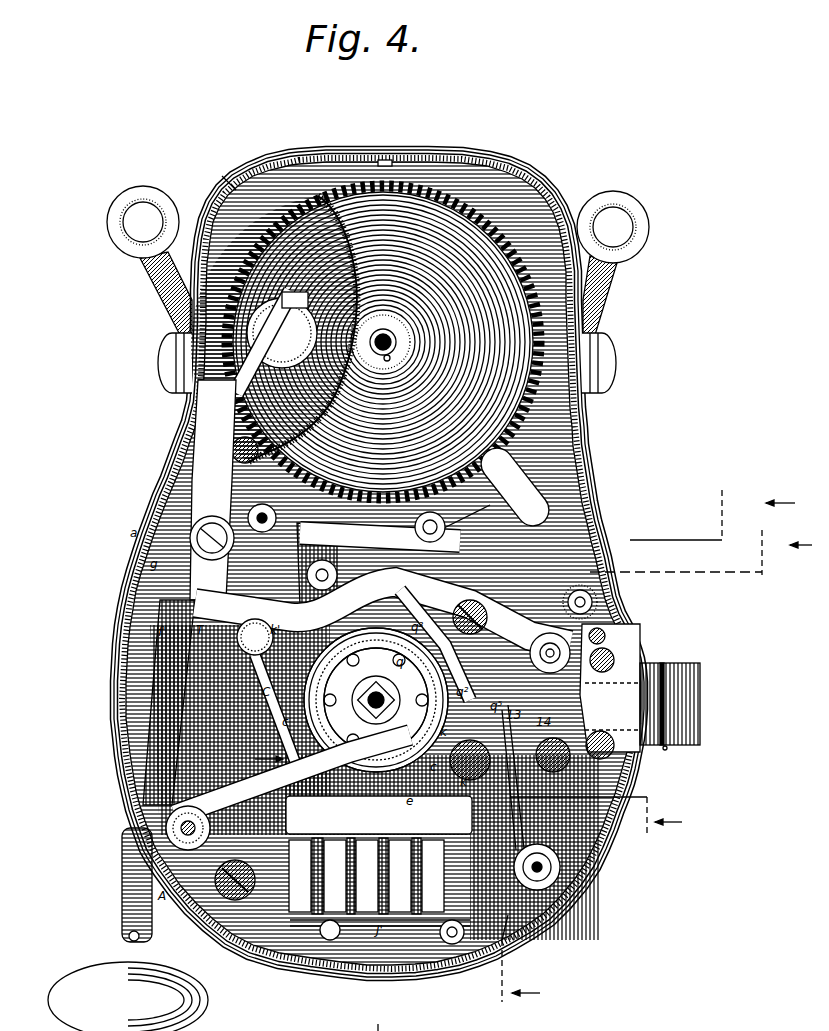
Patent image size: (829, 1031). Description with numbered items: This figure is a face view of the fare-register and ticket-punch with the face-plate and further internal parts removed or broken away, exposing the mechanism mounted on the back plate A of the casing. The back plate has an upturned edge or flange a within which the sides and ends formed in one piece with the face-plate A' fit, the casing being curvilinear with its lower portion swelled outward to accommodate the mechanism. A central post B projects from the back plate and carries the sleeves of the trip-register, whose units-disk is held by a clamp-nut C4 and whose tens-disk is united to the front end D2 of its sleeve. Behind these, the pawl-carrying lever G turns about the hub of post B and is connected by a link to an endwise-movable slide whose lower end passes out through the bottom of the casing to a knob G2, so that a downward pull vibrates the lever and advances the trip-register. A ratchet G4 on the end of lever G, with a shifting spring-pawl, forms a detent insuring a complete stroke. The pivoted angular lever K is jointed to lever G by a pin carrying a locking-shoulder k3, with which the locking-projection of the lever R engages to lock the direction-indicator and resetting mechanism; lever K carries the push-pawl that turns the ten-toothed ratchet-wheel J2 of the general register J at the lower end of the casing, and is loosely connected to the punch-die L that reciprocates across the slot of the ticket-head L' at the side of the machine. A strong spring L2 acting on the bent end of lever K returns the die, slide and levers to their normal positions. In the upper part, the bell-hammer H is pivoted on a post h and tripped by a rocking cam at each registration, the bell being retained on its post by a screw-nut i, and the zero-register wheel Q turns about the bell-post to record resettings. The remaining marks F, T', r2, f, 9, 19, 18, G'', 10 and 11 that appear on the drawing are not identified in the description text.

The upturned edge or flange a is at (348, 151).
The back plate A is at (378, 289).
The face-plate A' is at (223, 175).
The spring drum F is at (383, 342).
The arbor T' is at (383, 342).
The zero-register wheel Q is at (274, 329).
The pawl r2 is at (268, 377).
The lever R is at (189, 592).
The pivot f is at (216, 537).
The direction arrow 9 is at (312, 520).
The ratchet G4 is at (226, 715).
The pivoted lever K is at (382, 611).
The locking-shoulder k3 is at (255, 637).
The bell-hammer H is at (497, 487).
The central post B is at (376, 700).
The clamp-nut C4 is at (376, 700).
The front end of sleeve D D2 is at (376, 700).
The pawl-carrying lever G is at (292, 775).
The direction arrow 19 is at (277, 759).
The roller 18 is at (210, 818).
The general register J is at (379, 868).
The actuating ratchet-wheel J2 is at (455, 926).
The spring L2 is at (531, 797).
The punch-die L is at (598, 691).
The ticket-head L' is at (670, 704).
The screw-nut i is at (664, 757).
The strap G'' is at (127, 885).
The knob G2 is at (128, 996).
The section line 10 is at (644, 750).
The section line 11 is at (661, 683).
The post h is at (376, 1016).